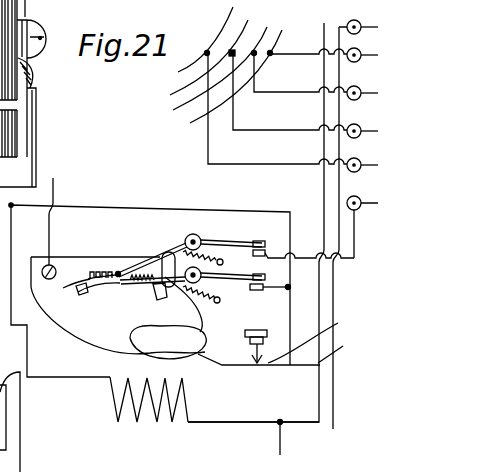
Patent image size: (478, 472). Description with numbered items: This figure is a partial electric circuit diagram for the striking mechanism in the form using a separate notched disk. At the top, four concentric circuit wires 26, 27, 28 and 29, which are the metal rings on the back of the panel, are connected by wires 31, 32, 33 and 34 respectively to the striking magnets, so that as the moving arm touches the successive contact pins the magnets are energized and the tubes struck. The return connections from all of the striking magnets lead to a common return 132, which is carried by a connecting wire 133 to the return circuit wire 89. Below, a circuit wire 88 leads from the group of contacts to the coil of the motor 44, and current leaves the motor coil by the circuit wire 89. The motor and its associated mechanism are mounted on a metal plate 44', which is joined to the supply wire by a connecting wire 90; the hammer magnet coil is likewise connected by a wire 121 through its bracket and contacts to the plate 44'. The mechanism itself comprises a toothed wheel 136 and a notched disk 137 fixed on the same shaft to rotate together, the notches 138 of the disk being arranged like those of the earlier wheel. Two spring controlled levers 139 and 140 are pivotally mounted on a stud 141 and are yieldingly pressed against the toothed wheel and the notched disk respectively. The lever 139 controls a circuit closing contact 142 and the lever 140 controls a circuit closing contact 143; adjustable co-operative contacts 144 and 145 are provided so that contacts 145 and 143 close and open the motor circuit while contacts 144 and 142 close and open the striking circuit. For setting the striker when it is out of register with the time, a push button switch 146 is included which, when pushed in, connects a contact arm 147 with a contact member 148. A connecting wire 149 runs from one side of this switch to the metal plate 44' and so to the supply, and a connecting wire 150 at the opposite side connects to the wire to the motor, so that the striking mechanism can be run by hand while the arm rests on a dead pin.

The circuit wire 26 is at (190, 123).
The circuit wire 27 is at (172, 110).
The circuit wire 28 is at (168, 93).
The circuit wire 29 is at (223, 25).
The wire 31 is at (300, 48).
The wire 32 is at (296, 88).
The wire 33 is at (288, 126).
The wire 34 is at (293, 112).
The motor 44 is at (167, 399).
The metal plate 44' is at (86, 255).
The circuit wire 88 is at (82, 377).
The circuit wire 89 is at (257, 419).
The connecting wire 90 is at (55, 186).
The wire 121 is at (355, 240).
The common return 132 is at (345, 402).
The connecting wire 133 is at (281, 447).
The toothed wheel 136 is at (95, 268).
The notched disk 137 is at (118, 315).
The notches 138 is at (92, 295).
The lever 139 is at (133, 268).
The lever 140 is at (164, 252).
The stud 141 is at (198, 297).
The circuit closing contact 142 is at (259, 233).
The circuit closing contact 143 is at (247, 267).
The adjustable contact 144 is at (265, 248).
The adjustable contact 145 is at (262, 292).
The push button switch 146 is at (261, 336).
The contact arm 147 is at (252, 360).
The contact member 148 is at (324, 336).
The connecting wire 149 is at (225, 346).
The connecting wire 150 is at (349, 350).